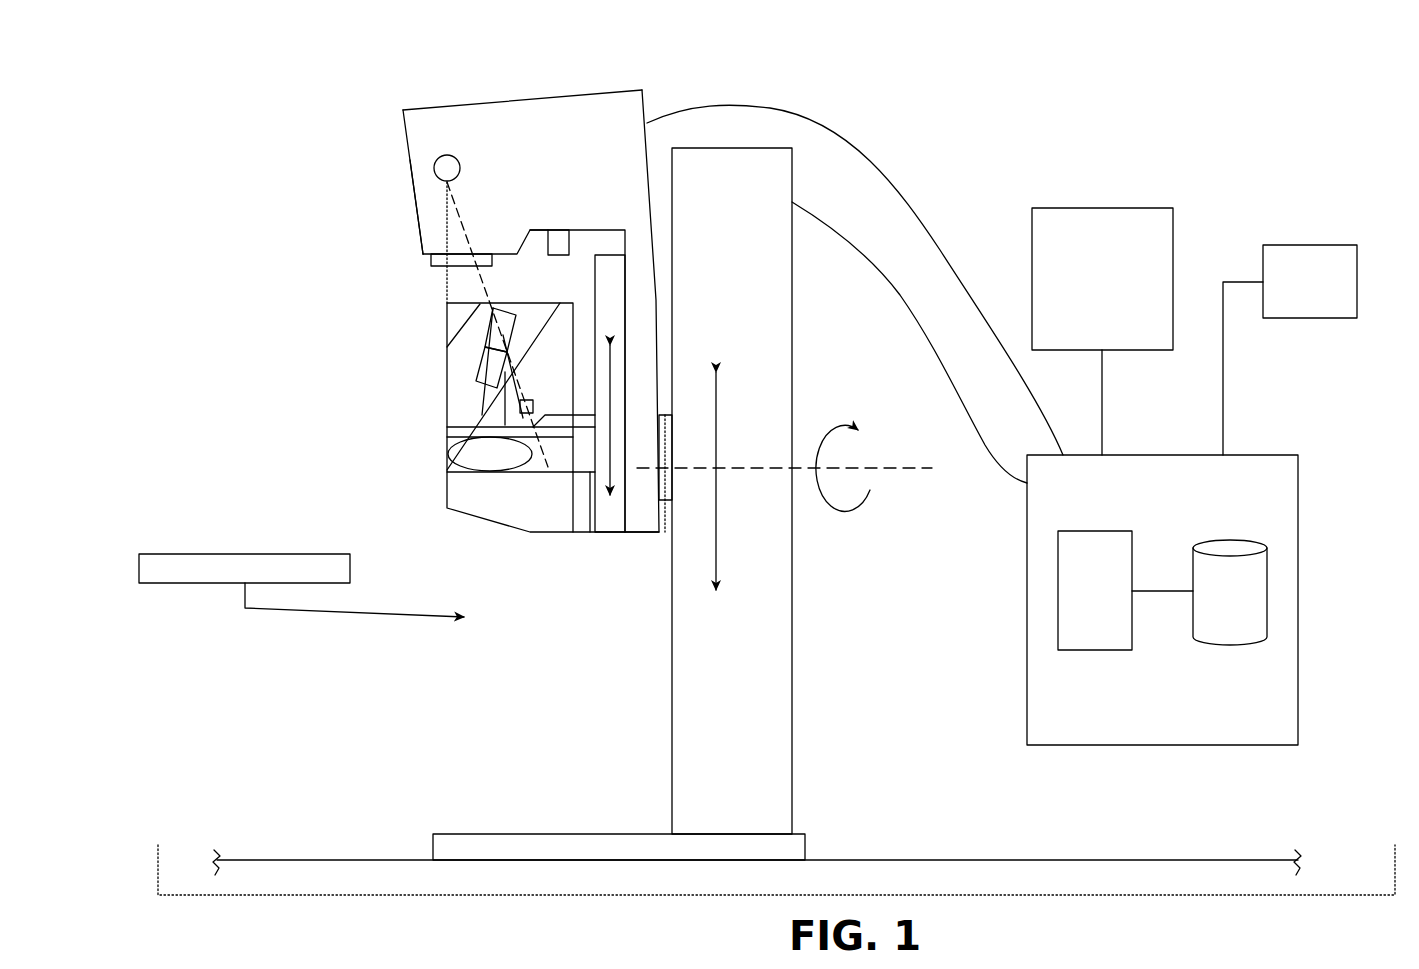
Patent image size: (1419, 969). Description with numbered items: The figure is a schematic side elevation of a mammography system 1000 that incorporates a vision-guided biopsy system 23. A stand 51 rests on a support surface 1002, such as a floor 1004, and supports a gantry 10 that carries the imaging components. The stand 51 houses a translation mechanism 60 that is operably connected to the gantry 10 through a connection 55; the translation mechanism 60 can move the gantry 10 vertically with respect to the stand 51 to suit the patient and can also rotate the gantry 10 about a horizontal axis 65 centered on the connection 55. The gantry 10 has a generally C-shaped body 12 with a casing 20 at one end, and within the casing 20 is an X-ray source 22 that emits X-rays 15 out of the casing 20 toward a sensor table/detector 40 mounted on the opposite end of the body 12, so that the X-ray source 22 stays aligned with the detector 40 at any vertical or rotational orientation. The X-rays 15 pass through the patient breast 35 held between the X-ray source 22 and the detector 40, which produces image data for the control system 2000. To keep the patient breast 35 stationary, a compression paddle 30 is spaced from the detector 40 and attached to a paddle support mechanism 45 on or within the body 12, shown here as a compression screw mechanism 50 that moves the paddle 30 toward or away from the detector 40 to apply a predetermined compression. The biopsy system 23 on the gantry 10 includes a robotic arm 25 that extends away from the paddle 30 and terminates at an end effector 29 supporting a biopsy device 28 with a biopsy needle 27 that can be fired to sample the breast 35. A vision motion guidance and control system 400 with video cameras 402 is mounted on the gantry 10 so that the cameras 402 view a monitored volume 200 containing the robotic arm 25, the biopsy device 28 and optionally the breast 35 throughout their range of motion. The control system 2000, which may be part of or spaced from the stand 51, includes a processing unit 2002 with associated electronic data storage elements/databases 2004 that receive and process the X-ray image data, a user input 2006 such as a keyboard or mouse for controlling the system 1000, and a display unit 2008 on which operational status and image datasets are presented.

The gantry 10 is at (410, 178).
The C-shaped body 12 is at (433, 103).
The casing 20 is at (418, 215).
The X-ray source 22 is at (447, 153).
The vision motion guidance and control system 400 is at (548, 222).
The video cameras 402 is at (560, 245).
The paddle support mechanism 45 is at (613, 290).
The X-rays 15 is at (445, 288).
The biopsy system 23 is at (422, 328).
The end effector 29 is at (487, 327).
The biopsy device 28 is at (487, 358).
The biopsy needle 27 is at (485, 405).
The robotic arm 25 is at (483, 412).
The compression paddle 30 is at (477, 435).
The patient breast 35 is at (482, 457).
The monitored volume 200 is at (566, 440).
The sensor table/detector 40 is at (490, 512).
The compression screw mechanism 50 is at (603, 480).
The connection 55 is at (665, 534).
The stand 51 is at (782, 635).
The translation mechanism 60 is at (718, 482).
The horizontal axis 65 is at (842, 468).
The control system 2000 is at (1302, 513).
The processing unit 2002 is at (1069, 604).
The electronic data storage elements/databases 2004 is at (1204, 604).
The user input 2006 is at (1284, 296).
The display unit 2008 is at (1076, 292).
The mammography system 1000 is at (301, 585).
The support surface 1002 is at (280, 855).
The floor 1004 is at (897, 858).